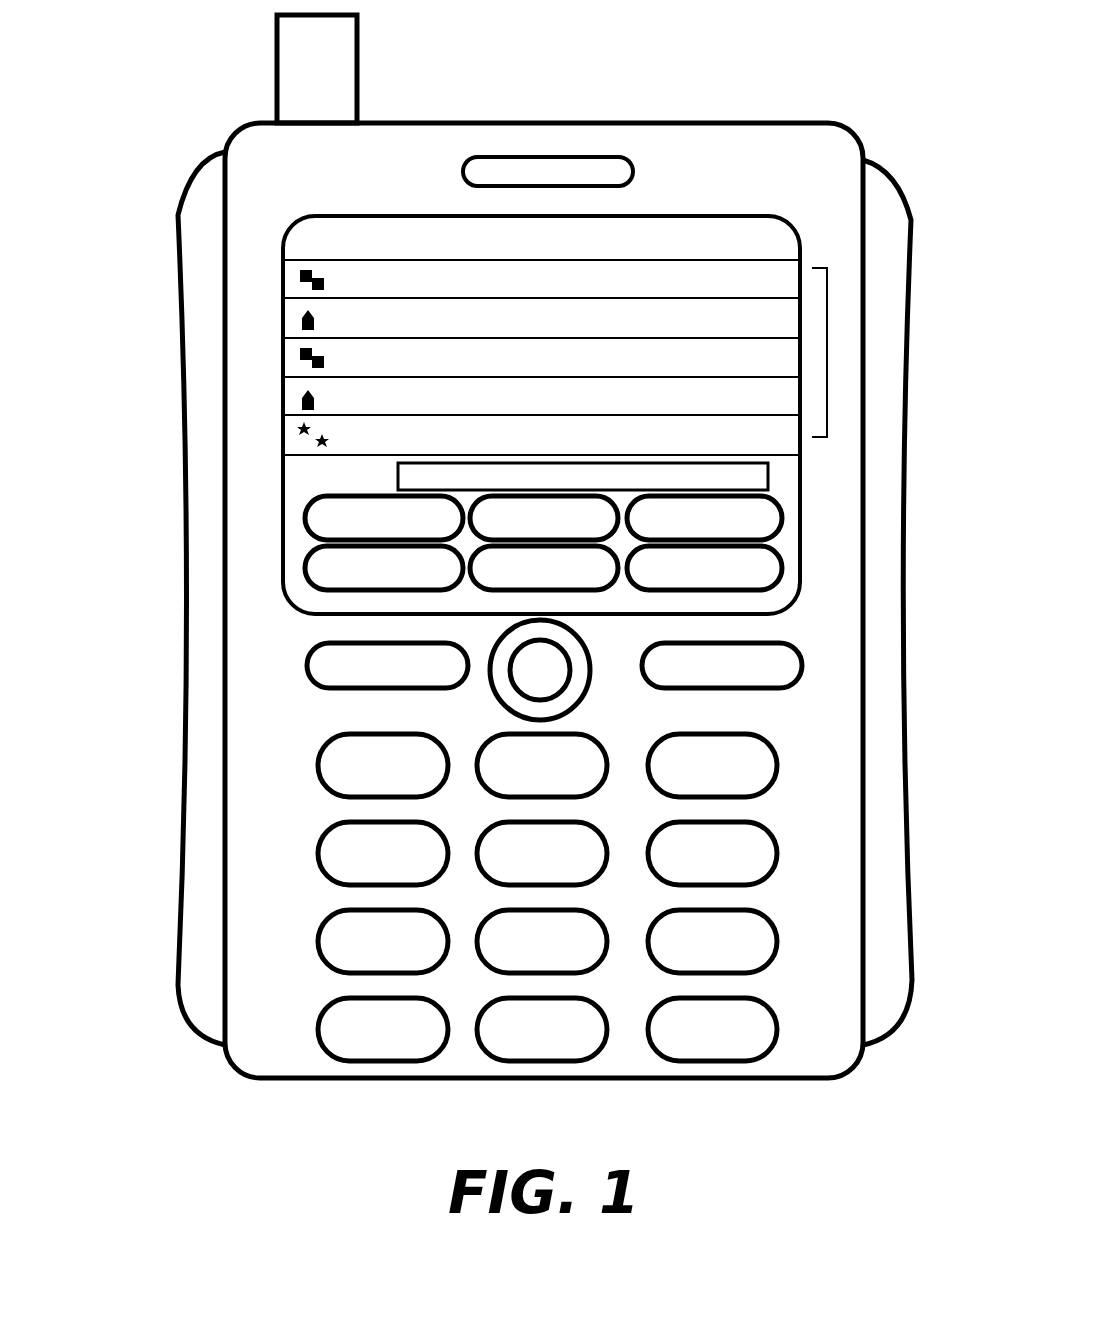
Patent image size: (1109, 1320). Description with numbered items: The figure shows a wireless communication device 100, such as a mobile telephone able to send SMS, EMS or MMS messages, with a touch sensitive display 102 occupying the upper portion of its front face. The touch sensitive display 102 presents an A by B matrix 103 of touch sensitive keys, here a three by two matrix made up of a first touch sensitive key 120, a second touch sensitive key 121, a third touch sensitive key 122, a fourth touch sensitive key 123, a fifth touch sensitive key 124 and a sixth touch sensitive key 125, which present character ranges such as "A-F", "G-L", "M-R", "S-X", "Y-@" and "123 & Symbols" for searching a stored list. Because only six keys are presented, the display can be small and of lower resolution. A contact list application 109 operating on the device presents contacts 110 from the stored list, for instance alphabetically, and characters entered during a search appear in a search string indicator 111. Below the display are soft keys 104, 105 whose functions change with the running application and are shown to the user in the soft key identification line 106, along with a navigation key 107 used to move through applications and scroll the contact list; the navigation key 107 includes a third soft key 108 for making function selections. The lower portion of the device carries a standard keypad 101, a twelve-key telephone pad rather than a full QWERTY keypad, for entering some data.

The wireless communication device 100 is at (148, 210).
The keypad 101 is at (780, 850).
The touch sensitive display 102 is at (523, 391).
The A by B matrix 103 is at (514, 572).
The soft key 104 is at (365, 666).
The soft key 105 is at (755, 667).
The soft key identification line 106 is at (750, 600).
The navigation key 107 is at (575, 670).
The third soft key 108 is at (535, 670).
The contact list application 109 is at (655, 240).
The contacts 110 is at (835, 345).
The search string indicator 111 is at (775, 477).
The first touch sensitive key 120 is at (320, 520).
The second touch sensitive key 121 is at (775, 517).
The third touch sensitive key 122 is at (577, 515).
The fourth touch sensitive key 123 is at (322, 567).
The fifth touch sensitive key 124 is at (490, 568).
The sixth touch sensitive key 125 is at (650, 568).